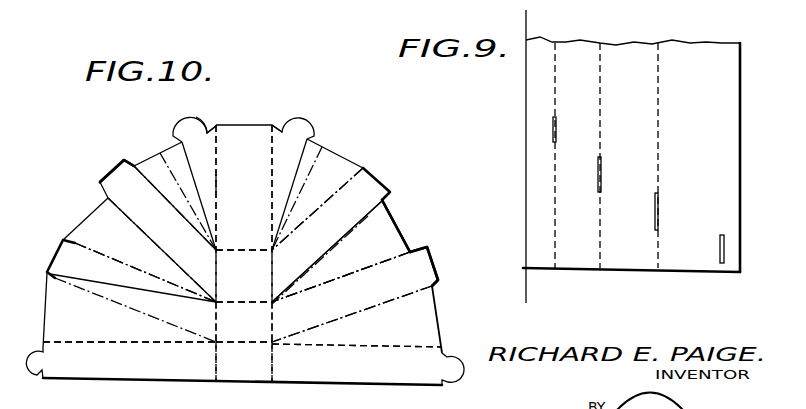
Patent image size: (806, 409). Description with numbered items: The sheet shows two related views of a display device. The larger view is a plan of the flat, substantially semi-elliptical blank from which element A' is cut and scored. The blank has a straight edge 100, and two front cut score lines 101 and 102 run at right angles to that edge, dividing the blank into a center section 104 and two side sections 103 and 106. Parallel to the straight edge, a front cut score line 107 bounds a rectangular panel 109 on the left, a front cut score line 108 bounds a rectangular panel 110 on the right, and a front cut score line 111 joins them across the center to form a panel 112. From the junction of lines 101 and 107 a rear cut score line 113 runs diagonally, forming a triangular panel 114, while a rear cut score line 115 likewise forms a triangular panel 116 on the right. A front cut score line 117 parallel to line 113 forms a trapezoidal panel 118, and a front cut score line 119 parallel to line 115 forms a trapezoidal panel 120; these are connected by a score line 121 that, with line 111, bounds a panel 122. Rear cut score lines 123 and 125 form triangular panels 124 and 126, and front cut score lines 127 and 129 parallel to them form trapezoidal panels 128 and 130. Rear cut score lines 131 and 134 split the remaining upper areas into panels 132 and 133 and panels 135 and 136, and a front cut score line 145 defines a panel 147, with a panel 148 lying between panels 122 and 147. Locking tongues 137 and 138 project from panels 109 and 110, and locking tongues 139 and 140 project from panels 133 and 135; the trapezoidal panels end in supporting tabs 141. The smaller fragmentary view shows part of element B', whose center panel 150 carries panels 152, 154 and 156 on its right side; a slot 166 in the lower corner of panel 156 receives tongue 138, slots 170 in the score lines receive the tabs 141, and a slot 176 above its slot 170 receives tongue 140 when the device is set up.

In FIG. 10, the straight edge 100 is at (133, 382).
In FIG. 10, the front cut score line 101 is at (216, 160).
In FIG. 10, the front cut score line 102 is at (272, 210).
In FIG. 10, the side section 103 is at (133, 165).
In FIG. 10, the center section 104 is at (234, 124).
In FIG. 10, the side section 106 is at (395, 212).
In FIG. 10, the front cut score line 107 is at (90, 340).
In FIG. 10, the front cut score line 108 is at (340, 347).
In FIG. 10, the rectangular panel 109 is at (129, 355).
In FIG. 10, the rectangular panel 110 is at (357, 357).
In FIG. 10, the front cut score line 111 is at (257, 344).
In FIG. 10, the panel 112 is at (244, 362).
In FIG. 10, the rear cut score line 113 is at (107, 298).
In FIG. 10, the triangular panel 114 is at (62, 317).
In FIG. 10, the rear cut score line 115 is at (391, 298).
In FIG. 10, the triangular panel 116 is at (415, 319).
In FIG. 10, the front cut score line 117 is at (123, 262).
In FIG. 10, the trapezoidal panel 118 is at (133, 272).
In FIG. 10, the front cut score line 119 is at (403, 244).
In FIG. 10, the trapezoidal panel 120 is at (352, 297).
In FIG. 10, the score line 121 is at (244, 290).
In FIG. 10, the panel 122 is at (244, 322).
In FIG. 10, the rear cut score line 123 is at (118, 205).
In FIG. 10, the triangular panel 124 is at (85, 220).
In FIG. 10, the rear cut score line 125 is at (365, 217).
In FIG. 10, the triangular panel 126 is at (341, 251).
In FIG. 10, the front cut score line 127 is at (168, 190).
In FIG. 10, the trapezoidal panel 128 is at (162, 234).
In FIG. 10, the front cut score line 129 is at (340, 187).
In FIG. 10, the trapezoidal panel 130 is at (327, 235).
In FIG. 10, the rear cut score line 131 is at (216, 183).
In FIG. 10, the panel 132 is at (162, 151).
In FIG. 10, the panel 133 is at (208, 130).
In FIG. 10, the rear cut score line 134 is at (299, 177).
In FIG. 10, the panel 135 is at (282, 130).
In FIG. 10, the panel 136 is at (323, 147).
In FIG. 10, the locking tongue 137 is at (37, 374).
In FIG. 10, the locking tongue 138 is at (453, 354).
In FIG. 10, the locking tongue 139 is at (174, 132).
In FIG. 10, the locking tongue 140 is at (298, 117).
In FIG. 10, the supporting tab 141 is at (100, 182).
In FIG. 10, the front cut score line 145 is at (233, 249).
In FIG. 10, the panel 147 is at (244, 187).
In FIG. 10, the panel 148 is at (244, 276).
In FIG. 9, the center panel 150 is at (535, 79).
In FIG. 9, the panel 152 is at (578, 48).
In FIG. 9, the panel 154 is at (632, 52).
In FIG. 9, the panel 156 is at (700, 52).
In FIG. 9, the slot 166 is at (726, 248).
In FIG. 9, the slot 170 is at (601, 167).
In FIG. 9, the slot 176 is at (557, 128).